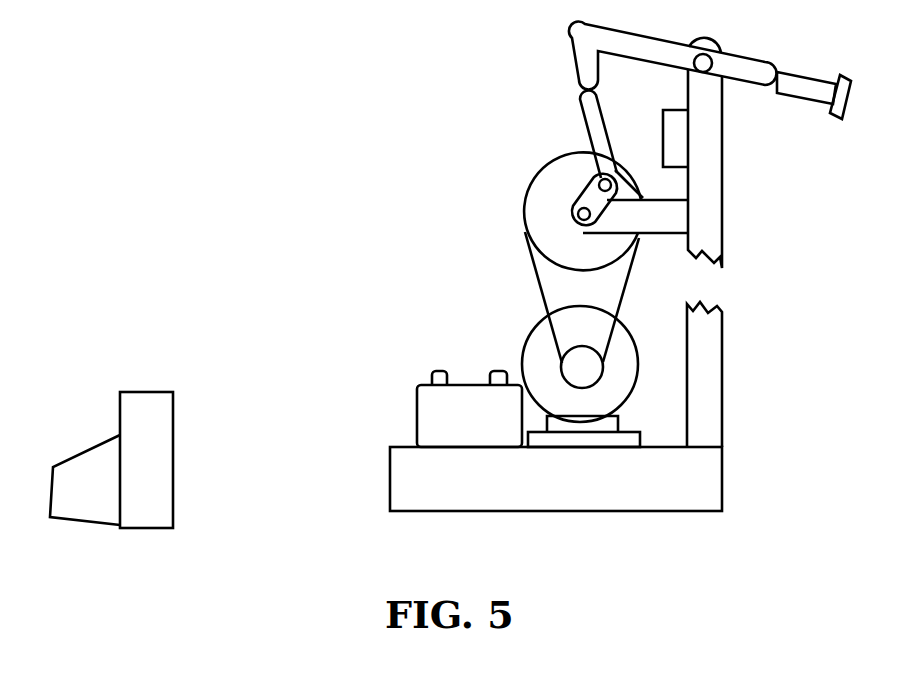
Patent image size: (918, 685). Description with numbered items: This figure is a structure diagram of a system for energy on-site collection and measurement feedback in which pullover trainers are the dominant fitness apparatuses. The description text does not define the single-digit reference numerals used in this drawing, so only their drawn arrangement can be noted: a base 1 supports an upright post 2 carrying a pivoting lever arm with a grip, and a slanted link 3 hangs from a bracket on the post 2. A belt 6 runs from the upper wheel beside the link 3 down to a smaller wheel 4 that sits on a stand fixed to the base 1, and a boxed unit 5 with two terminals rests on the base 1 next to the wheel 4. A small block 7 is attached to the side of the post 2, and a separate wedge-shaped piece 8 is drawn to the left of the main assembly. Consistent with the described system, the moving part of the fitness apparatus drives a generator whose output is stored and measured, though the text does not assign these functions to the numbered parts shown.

The base 1 is at (703, 472).
The upright post / frame 2 is at (705, 143).
The connecting rod / crank link 3 is at (597, 122).
The driven wheel 4 is at (545, 338).
The battery / power unit 5 is at (465, 408).
The belt 6 is at (533, 247).
The block / stopper 7 is at (677, 135).
The tool head / attachment 8 is at (150, 470).